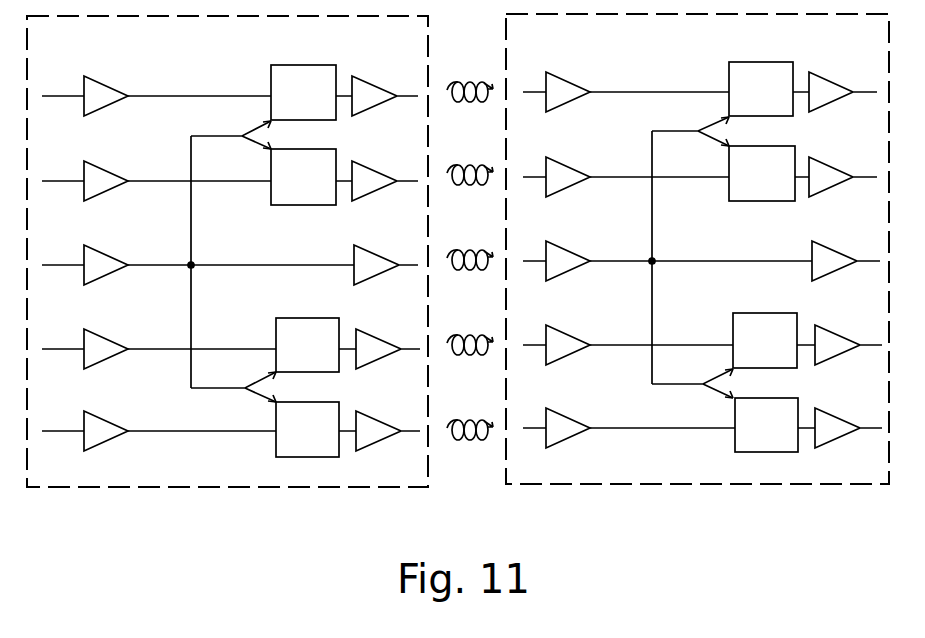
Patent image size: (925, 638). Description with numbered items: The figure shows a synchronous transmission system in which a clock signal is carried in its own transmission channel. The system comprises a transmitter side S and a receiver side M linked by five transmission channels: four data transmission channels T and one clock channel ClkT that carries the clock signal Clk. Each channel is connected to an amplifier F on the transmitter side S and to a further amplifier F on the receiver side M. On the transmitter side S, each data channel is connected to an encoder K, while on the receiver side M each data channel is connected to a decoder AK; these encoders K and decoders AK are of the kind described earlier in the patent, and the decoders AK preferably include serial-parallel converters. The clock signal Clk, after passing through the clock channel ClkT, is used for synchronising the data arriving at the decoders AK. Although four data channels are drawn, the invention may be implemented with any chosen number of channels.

The amplifier F is at (98, 94).
The encoder K is at (242, 261).
The decoder AK is at (702, 257).
The data transmission channel T is at (470, 245).
The clock transmission channel ClkT is at (469, 243).
The clock signal Clk is at (62, 252).
The transmitter side S is at (268, 487).
The receiver side M is at (716, 483).